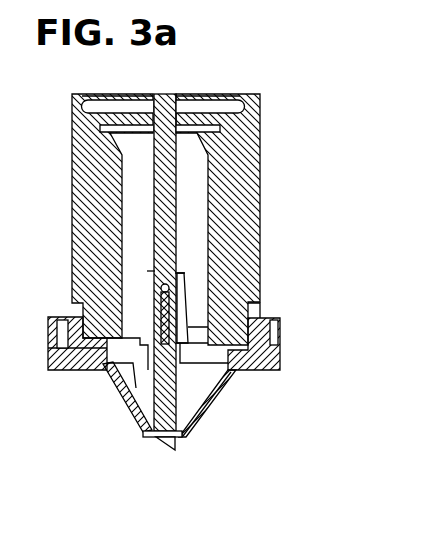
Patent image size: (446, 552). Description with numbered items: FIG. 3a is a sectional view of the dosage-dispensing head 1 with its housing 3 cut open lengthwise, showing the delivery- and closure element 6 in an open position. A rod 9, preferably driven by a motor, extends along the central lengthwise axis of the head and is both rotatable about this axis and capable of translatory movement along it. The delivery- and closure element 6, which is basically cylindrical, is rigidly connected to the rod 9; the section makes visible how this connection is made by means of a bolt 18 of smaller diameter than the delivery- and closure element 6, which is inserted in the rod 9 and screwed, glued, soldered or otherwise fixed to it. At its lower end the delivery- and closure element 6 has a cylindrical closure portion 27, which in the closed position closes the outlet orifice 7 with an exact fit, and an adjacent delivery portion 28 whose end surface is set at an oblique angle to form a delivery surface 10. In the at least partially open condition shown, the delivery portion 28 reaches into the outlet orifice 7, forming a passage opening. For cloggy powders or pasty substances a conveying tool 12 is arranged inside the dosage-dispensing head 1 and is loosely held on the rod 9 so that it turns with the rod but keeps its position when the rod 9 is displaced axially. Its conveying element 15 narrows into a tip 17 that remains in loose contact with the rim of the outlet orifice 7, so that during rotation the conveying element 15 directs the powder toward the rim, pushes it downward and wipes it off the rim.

The dosage-dispensing head 1 is at (266, 161).
The housing 3 is at (85, 372).
The delivery- and closure element 6 is at (193, 412).
The outlet orifice 7 is at (153, 438).
The rod 9 is at (157, 238).
The delivery surface 10 is at (161, 440).
The conveying tool 12 is at (197, 308).
The conveying element 15 is at (150, 388).
The tip 17 is at (143, 431).
The bolt 18 is at (200, 333).
The closure portion 27 is at (185, 418).
The delivery portion 28 is at (184, 438).